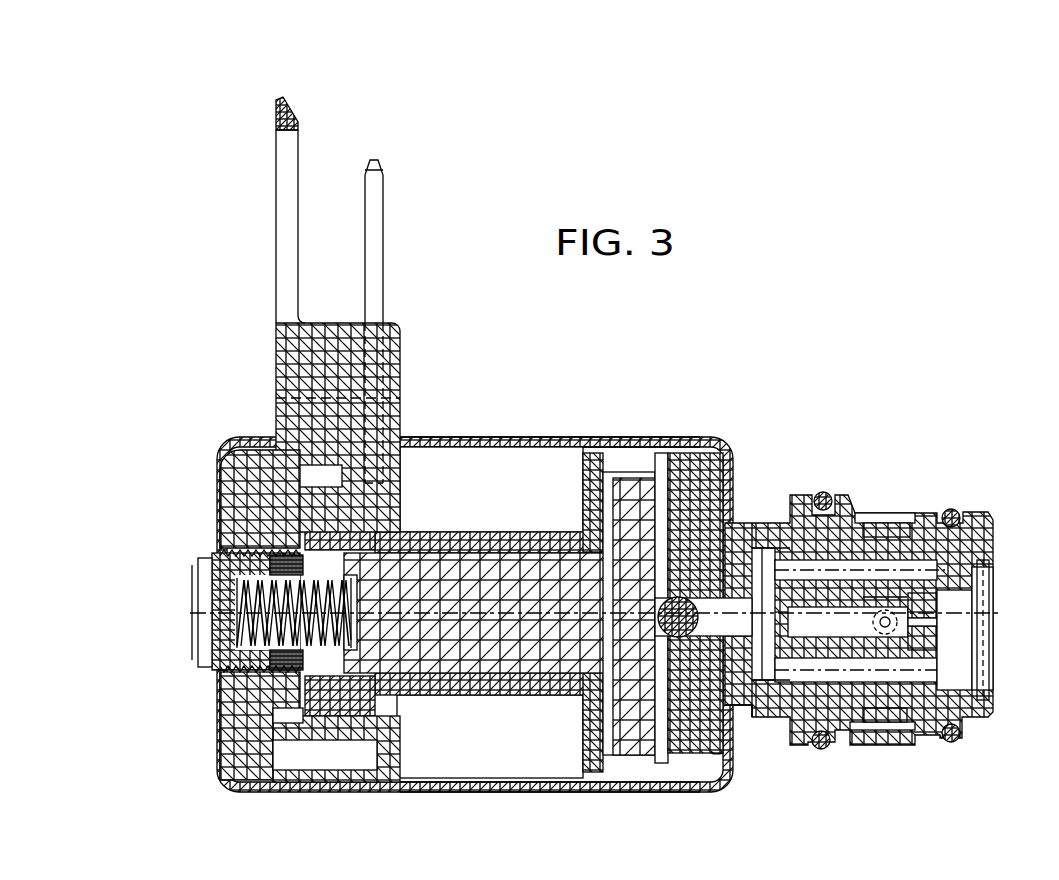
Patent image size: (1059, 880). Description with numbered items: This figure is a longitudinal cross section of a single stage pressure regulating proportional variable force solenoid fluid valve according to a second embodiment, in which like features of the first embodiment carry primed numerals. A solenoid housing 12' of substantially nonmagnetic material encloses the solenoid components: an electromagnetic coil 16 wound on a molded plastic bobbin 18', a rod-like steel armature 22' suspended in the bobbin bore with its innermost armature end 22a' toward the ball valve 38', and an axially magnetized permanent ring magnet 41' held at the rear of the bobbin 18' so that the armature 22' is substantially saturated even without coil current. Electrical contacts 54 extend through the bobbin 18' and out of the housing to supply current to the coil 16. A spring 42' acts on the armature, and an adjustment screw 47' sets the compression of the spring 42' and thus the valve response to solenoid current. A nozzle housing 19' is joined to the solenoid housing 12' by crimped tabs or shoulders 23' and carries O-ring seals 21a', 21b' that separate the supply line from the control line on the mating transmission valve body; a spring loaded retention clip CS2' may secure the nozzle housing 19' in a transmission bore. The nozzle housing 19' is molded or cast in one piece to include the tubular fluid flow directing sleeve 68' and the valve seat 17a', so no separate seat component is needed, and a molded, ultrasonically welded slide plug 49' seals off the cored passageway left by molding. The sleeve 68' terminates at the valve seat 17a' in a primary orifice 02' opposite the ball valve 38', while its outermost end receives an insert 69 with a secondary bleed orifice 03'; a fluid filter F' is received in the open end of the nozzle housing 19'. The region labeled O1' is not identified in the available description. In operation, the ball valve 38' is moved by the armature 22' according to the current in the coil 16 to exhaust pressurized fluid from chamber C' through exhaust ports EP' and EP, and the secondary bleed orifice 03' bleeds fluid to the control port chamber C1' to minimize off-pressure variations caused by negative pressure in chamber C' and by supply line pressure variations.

The electrical contacts 54 is at (378, 266).
The adjustment screw 47' is at (235, 493).
The bobbin 18' is at (373, 314).
The armature 22' is at (454, 571).
The innermost armature end 22a' is at (626, 562).
The ball valve 38' is at (675, 491).
The exhaust ports EP' is at (582, 409).
The tabs or shoulders 23' is at (734, 579).
The valve seat 17a' is at (859, 589).
The slide plug 49' is at (829, 487).
The retention clip CS2' is at (917, 470).
The fluid flow directing sleeve 68' is at (936, 537).
The insert 69 is at (933, 610).
The fluid filter F' is at (1013, 630).
The secondary bleed orifice 03' is at (983, 618).
The chamber O1' is at (848, 618).
The control port chamber C1' is at (954, 640).
The spring 42' is at (236, 644).
The permanent ring magnet 41' is at (310, 761).
The solenoid housing 12' is at (475, 644).
The electromagnetic coil 16 is at (494, 752).
The exhaust ports EP is at (550, 820).
The chamber C' is at (741, 757).
The primary orifice 02' is at (780, 759).
The O-ring seal 21a' is at (851, 784).
The nozzle housing 19' is at (881, 748).
The O-ring seal 21b' is at (972, 770).